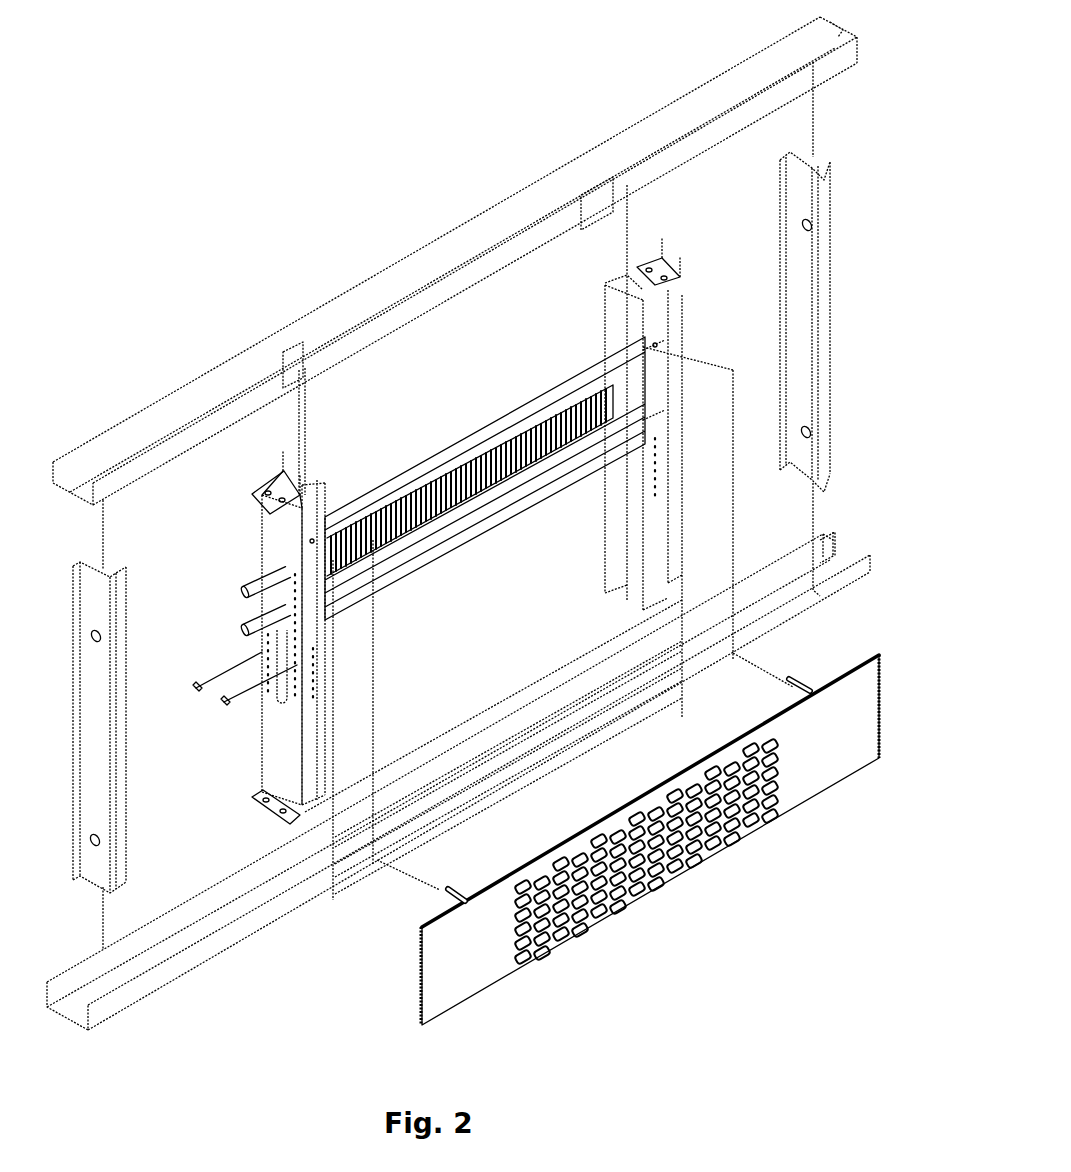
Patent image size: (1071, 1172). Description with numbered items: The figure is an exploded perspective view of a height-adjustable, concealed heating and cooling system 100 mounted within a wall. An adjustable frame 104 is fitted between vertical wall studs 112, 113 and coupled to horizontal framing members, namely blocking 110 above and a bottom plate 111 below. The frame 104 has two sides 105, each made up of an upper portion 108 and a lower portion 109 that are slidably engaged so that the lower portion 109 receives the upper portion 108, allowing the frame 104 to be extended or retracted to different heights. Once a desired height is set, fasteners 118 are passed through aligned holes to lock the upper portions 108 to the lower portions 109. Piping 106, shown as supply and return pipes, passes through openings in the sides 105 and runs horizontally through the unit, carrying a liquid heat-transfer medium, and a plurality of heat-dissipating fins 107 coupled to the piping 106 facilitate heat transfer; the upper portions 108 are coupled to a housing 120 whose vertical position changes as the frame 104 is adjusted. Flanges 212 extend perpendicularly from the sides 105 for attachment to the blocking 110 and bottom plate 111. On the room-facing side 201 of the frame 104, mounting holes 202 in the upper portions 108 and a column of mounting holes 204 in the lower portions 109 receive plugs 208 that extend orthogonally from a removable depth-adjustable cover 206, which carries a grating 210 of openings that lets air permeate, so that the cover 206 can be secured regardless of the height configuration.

The heating and cooling system 100 is at (350, 230).
The adjustable frame 104 is at (228, 530).
The sides 105 is at (688, 285).
The piping 106 is at (243, 624).
The heat-dissipating fins 107 is at (567, 415).
The upper portion 108 is at (617, 280).
The lower portion 109 is at (318, 790).
The blocking 110 is at (697, 100).
The bottom plate 111 is at (830, 595).
The wall stud 112 is at (97, 593).
The wall stud 113 is at (818, 160).
The fasteners 118 is at (195, 688).
The housing 120 is at (495, 430).
The room-facing side 201 is at (668, 382).
The mounting holes 202 is at (312, 540).
The mounting holes 204 is at (318, 642).
The depth-adjustable cover 206 is at (485, 960).
The plugs 208 is at (455, 888).
The grating 210 is at (648, 870).
The flanges 212 is at (660, 265).